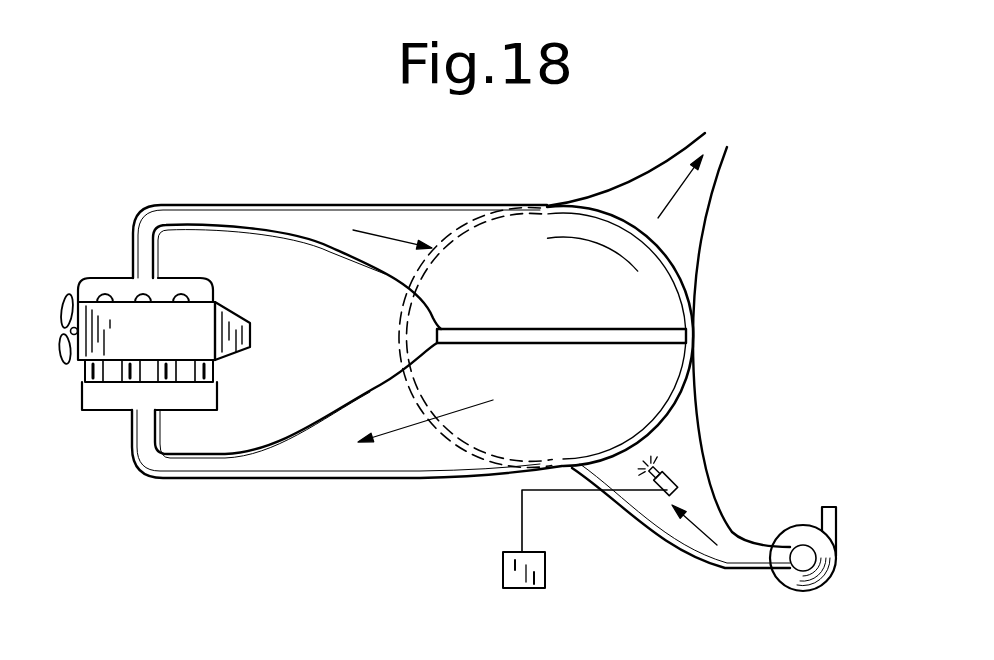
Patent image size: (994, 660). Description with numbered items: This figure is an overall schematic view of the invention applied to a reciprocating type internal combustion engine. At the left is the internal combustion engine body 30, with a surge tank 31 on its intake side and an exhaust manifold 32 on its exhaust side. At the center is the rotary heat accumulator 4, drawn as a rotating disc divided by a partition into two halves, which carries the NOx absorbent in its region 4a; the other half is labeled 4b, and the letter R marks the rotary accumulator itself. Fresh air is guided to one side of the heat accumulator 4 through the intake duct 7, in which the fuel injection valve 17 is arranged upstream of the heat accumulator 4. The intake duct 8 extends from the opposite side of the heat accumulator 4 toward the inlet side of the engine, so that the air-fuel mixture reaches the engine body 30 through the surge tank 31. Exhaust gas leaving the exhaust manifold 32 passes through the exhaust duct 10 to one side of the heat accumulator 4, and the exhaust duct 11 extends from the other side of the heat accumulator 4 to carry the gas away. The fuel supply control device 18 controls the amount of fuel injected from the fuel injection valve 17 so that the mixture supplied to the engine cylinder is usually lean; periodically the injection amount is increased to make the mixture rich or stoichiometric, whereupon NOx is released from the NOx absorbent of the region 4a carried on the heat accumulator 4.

The rotary heat accumulator 4 is at (712, 340).
The region of the heat accumulator carrying the NOx absorbent 4a is at (652, 382).
The upper chamber 4b is at (652, 310).
The intake duct 7 is at (658, 515).
The intake duct 8 is at (297, 462).
The exhaust duct 10 is at (327, 220).
The exhaust duct 11 is at (687, 197).
The fuel injection valve 17 is at (672, 472).
The fuel supply control device 18 is at (503, 565).
The internal combustion engine body 30 is at (205, 318).
The surge tank 31 is at (110, 398).
The exhaust manifold 32 is at (90, 292).
The annular combustion chamber R is at (519, 248).